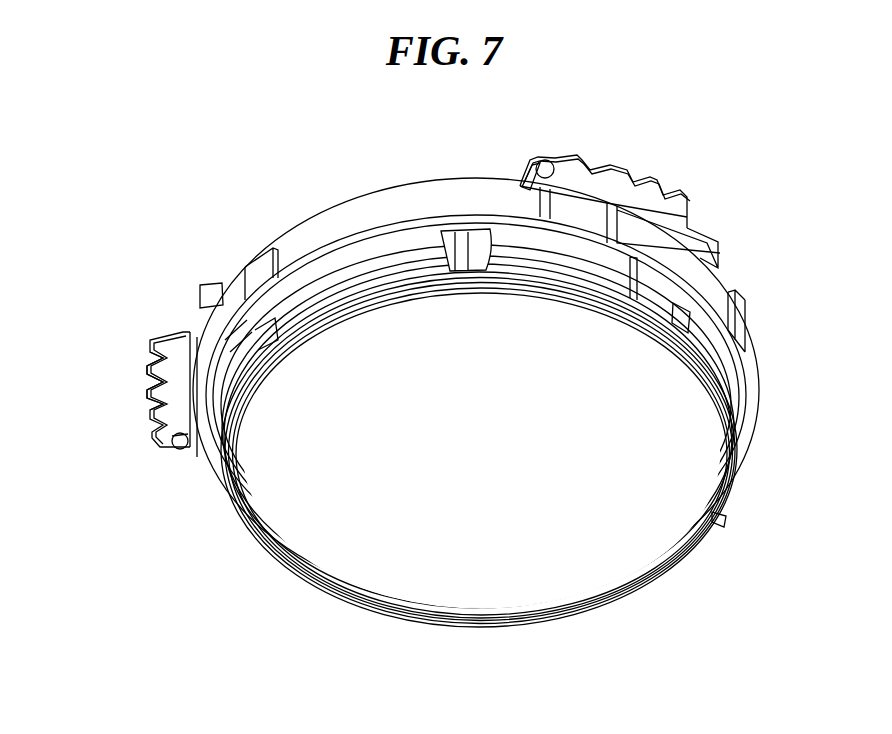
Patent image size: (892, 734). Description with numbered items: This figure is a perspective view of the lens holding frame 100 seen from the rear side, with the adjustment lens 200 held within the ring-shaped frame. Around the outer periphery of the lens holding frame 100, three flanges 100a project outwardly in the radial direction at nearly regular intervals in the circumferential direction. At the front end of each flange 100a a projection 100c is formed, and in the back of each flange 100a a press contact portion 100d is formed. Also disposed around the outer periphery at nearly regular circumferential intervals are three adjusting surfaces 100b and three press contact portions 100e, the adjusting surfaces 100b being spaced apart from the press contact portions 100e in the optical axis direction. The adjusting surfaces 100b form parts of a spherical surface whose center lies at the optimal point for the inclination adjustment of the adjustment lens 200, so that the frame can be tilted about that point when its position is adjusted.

The lens holding frame 100 is at (363, 212).
The flange 100a is at (657, 187).
The adjusting surface 100b is at (695, 333).
The projection 100c is at (147, 397).
The press contact portion 100d is at (553, 167).
The press contact portion 100e is at (255, 272).
The adjustment lens 200 is at (463, 597).